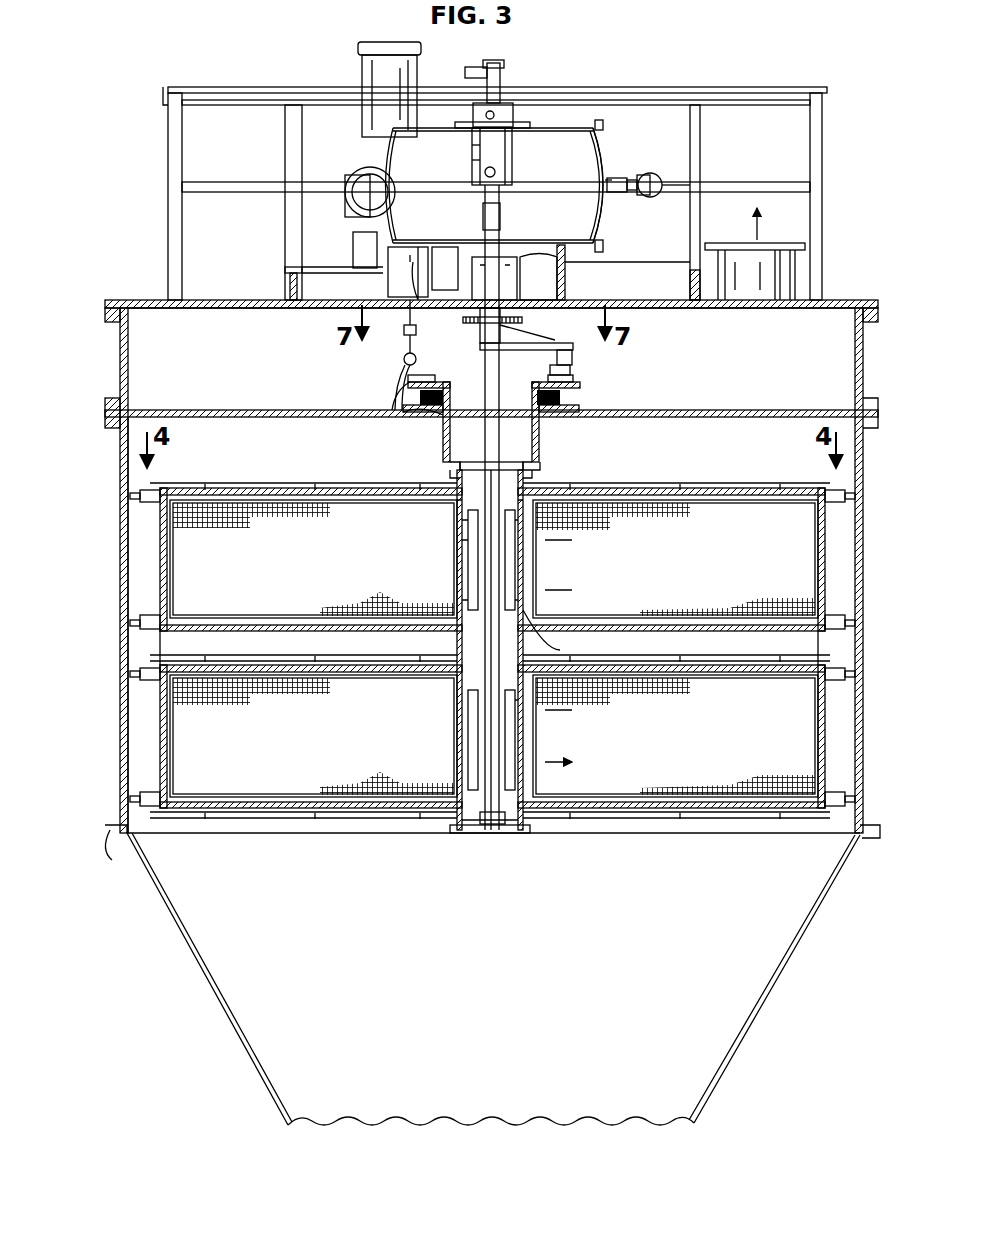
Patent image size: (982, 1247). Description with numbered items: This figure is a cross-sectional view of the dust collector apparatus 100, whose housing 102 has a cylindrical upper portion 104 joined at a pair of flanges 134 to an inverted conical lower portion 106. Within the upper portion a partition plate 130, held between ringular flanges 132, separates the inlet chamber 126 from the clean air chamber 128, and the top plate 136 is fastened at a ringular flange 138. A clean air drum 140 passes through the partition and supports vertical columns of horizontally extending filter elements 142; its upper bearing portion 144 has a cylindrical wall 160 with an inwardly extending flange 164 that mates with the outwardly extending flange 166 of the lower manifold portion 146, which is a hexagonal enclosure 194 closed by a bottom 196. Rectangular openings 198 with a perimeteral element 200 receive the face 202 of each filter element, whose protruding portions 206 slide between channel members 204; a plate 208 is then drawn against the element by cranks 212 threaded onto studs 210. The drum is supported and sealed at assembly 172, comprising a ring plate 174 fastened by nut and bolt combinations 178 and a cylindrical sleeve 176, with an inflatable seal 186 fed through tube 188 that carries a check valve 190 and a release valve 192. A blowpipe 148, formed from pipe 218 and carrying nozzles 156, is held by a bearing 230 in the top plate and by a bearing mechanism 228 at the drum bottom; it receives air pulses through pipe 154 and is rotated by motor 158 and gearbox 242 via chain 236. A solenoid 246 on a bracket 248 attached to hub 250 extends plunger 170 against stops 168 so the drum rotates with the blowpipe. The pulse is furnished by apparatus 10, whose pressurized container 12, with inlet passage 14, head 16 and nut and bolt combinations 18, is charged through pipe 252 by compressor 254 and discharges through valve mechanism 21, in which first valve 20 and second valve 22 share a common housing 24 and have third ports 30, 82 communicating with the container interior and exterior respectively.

The air pulse apparatus 10 is at (520, 149).
The pressurized container 12 is at (540, 128).
The inlet passage 14 is at (605, 178).
The head 16 is at (605, 135).
The nut and bolt combinations 18 is at (598, 122).
The first valve 20 is at (512, 150).
The valve mechanism 21 is at (470, 146).
The second valve 22 is at (500, 108).
The common housing 24 is at (470, 158).
The third ports 30 is at (485, 176).
The third ports 82 is at (495, 113).
The dust collector apparatus 100 is at (180, 1030).
The housing 102 is at (848, 300).
The cylindrical upper portion 104 is at (115, 838).
The inverted conical lower portion 106 is at (195, 978).
The inlet chamber 126 is at (268, 464).
The clean air chamber 128 is at (275, 382).
The partition plate 130 is at (196, 408).
The ringular flanges 132 is at (122, 400).
The flanges 134 is at (870, 842).
The top plate 136 is at (268, 310).
The ringular flange 138 is at (855, 318).
The clean air drum 140 is at (600, 400).
The filter elements 142 is at (494, 648).
The upper bearing portion 144 is at (442, 445).
The lower manifold portion 146 is at (480, 670).
The blowpipe 148 is at (470, 690).
The pipe 154 is at (500, 230).
The nozzles 156 is at (560, 545).
The motor 158 is at (388, 280).
The cylindrical wall 160 is at (455, 390).
The inwardly extending flange 164 is at (522, 462).
The outwardly extending flange 166 is at (540, 466).
The stops 168 is at (406, 378).
The solenoid operated plunger 170 is at (550, 370).
The seal assembly 172 is at (565, 398).
The ring plate 174 is at (400, 410).
The cylindrical sleeve 176 is at (448, 472).
The nut and bolt combinations 178 is at (578, 414).
The inflatable seal 186 is at (440, 415).
The tube 188 is at (404, 358).
The check valve 190 is at (417, 330).
The valve 192 is at (406, 350).
The hexagonal enclosure 194 is at (540, 625).
The bottom 196 is at (475, 830).
The openings 198 is at (466, 575).
The perimeteral element 200 is at (456, 510).
The face 202 is at (460, 536).
The channel member 204 is at (305, 498).
The protruding portion 206 is at (260, 500).
The plate 208 is at (168, 540).
The studs 210 is at (138, 495).
The crank 212 is at (160, 515).
The pipe 218 is at (450, 830).
The bearing mechanism 228 is at (492, 832).
The bearing 230 is at (517, 285).
The chain 236 is at (530, 325).
The gearbox 242 is at (575, 310).
The solenoid 246 is at (575, 358).
The bracket 248 is at (595, 315).
The hub 250 is at (482, 345).
The pipe 252 is at (650, 173).
The compressor 254 is at (355, 198).